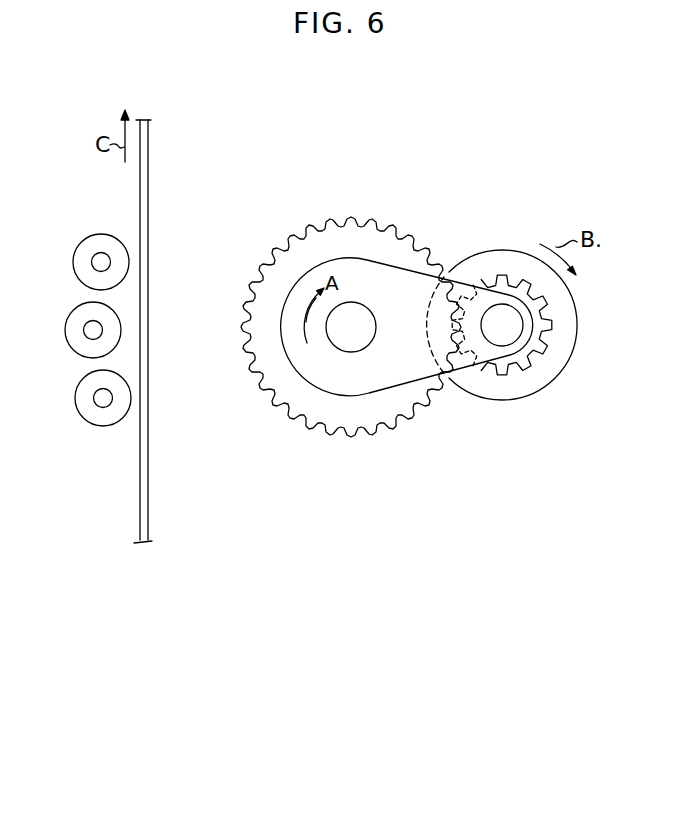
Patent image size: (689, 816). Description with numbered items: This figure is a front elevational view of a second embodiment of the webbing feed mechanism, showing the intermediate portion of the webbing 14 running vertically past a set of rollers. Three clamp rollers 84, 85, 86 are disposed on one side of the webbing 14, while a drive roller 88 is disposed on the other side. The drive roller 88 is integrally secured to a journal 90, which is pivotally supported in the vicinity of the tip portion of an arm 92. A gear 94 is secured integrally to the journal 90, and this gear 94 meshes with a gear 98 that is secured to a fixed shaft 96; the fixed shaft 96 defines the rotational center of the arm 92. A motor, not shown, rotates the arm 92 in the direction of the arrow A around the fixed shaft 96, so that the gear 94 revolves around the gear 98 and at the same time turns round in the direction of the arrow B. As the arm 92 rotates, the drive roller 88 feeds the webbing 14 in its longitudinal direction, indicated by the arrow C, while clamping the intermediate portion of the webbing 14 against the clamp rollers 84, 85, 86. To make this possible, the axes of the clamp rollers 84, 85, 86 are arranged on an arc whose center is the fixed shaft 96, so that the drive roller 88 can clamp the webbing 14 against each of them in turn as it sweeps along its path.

The webbing 14 is at (148, 190).
The clamp roller 84 is at (105, 233).
The clamp roller 85 is at (67, 347).
The clamp roller 86 is at (77, 412).
The drive roller 88 is at (574, 349).
The journal 90 is at (508, 322).
The arm 92 is at (400, 377).
The gear 94 is at (533, 362).
The fixed shaft 96 is at (366, 343).
The gear 98 is at (337, 432).